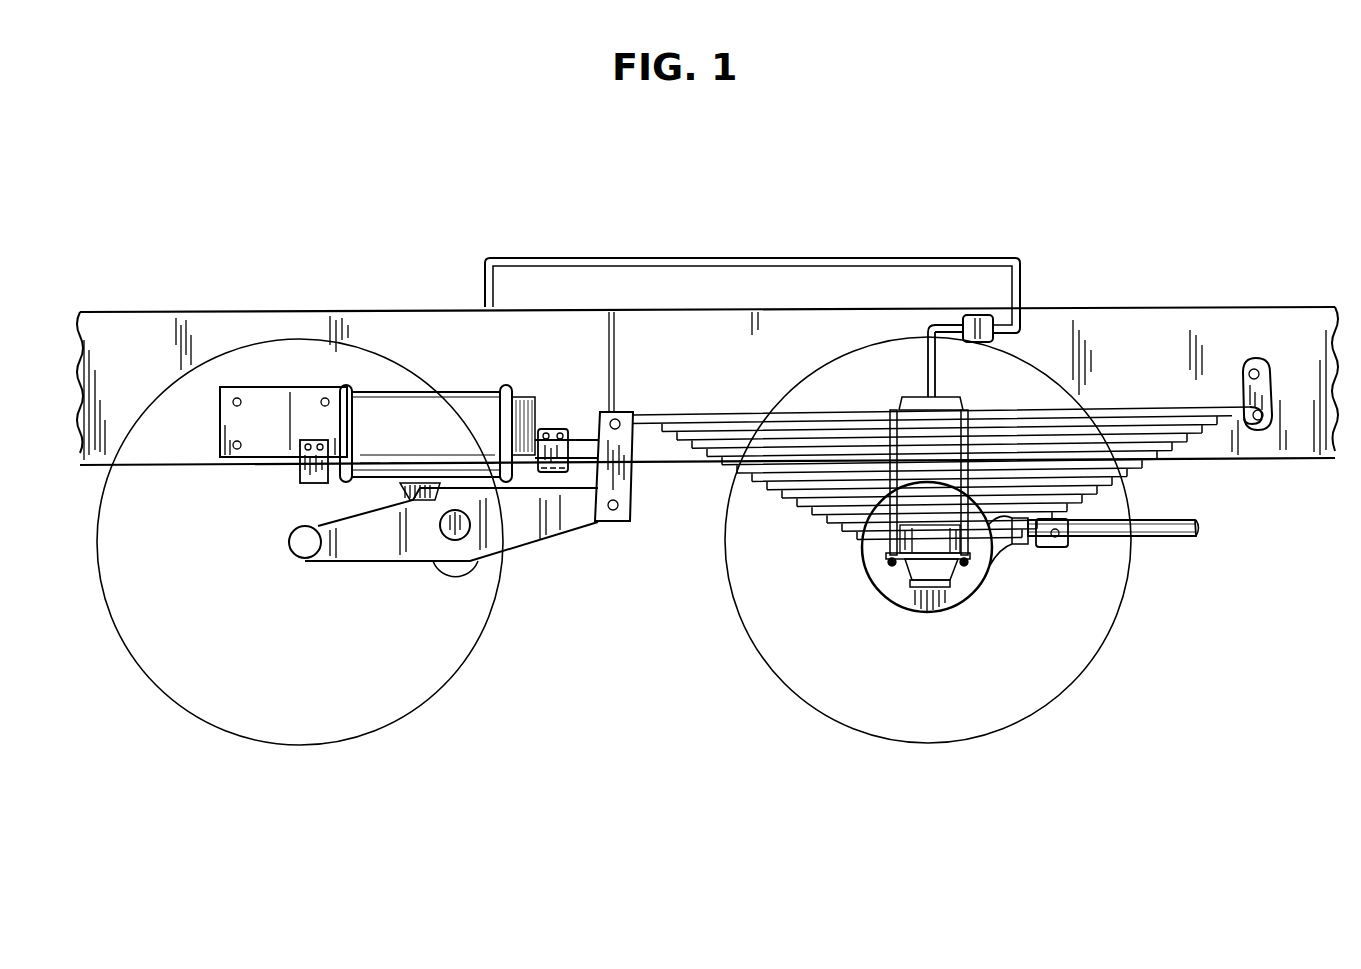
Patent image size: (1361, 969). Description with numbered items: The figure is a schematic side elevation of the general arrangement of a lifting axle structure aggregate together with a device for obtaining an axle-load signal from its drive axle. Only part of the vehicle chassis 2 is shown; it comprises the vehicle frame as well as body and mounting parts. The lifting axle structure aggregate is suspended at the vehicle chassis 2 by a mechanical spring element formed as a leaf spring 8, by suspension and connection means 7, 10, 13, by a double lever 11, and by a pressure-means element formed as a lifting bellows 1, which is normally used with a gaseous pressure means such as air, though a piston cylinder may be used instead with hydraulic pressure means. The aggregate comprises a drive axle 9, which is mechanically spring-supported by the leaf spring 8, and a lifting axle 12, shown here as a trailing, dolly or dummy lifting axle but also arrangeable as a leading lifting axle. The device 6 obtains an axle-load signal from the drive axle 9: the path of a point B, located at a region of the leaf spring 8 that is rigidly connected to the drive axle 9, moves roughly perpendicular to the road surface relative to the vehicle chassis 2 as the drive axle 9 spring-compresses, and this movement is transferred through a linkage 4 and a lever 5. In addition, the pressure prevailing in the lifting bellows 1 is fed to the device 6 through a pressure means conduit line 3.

The lifting bellows 1 is at (407, 427).
The vehicle chassis 2 is at (637, 305).
The pressure means conduit line 3 is at (756, 262).
The linkage 4 is at (921, 354).
The lever 5 is at (945, 326).
The device for obtaining an axle-load signal 6 is at (985, 300).
The suspension and connection means 7 is at (1273, 372).
The leaf spring 8 is at (985, 405).
The drive axle 9 is at (980, 583).
The suspension and connection means 10 is at (625, 483).
The double lever 11 is at (525, 525).
The lifting axle 12 is at (352, 602).
The suspension and connection means 13 is at (445, 531).